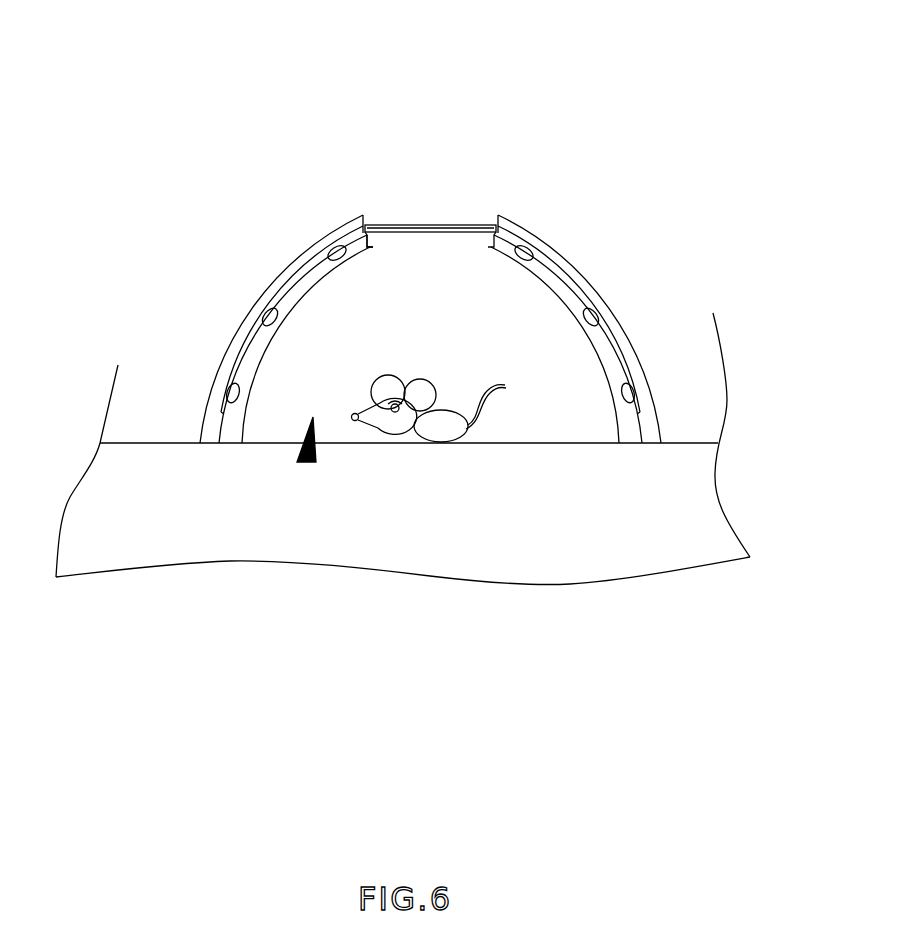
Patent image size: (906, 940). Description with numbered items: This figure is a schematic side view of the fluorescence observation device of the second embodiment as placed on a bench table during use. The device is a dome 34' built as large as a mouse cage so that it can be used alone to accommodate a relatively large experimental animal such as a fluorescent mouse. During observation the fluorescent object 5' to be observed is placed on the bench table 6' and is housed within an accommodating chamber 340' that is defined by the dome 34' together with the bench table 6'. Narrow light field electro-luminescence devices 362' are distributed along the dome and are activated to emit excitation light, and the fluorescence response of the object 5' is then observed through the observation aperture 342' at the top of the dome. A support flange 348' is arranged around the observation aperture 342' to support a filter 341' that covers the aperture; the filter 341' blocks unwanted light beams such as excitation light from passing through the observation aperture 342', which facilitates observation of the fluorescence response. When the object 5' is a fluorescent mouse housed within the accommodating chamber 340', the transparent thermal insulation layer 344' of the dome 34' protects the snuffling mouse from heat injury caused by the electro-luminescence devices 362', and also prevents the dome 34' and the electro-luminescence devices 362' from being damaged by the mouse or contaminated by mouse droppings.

The dome 34' is at (456, 227).
The observation aperture 342' is at (430, 238).
The filter 341' is at (449, 159).
The transparent thermal insulation layer 344' is at (456, 329).
The narrow light field electro-luminescence devices 362' is at (430, 283).
The support flange 348' is at (418, 267).
The accommodating chamber 340' is at (305, 542).
The fluorescent object 5' is at (445, 521).
The bench table 6' is at (403, 509).